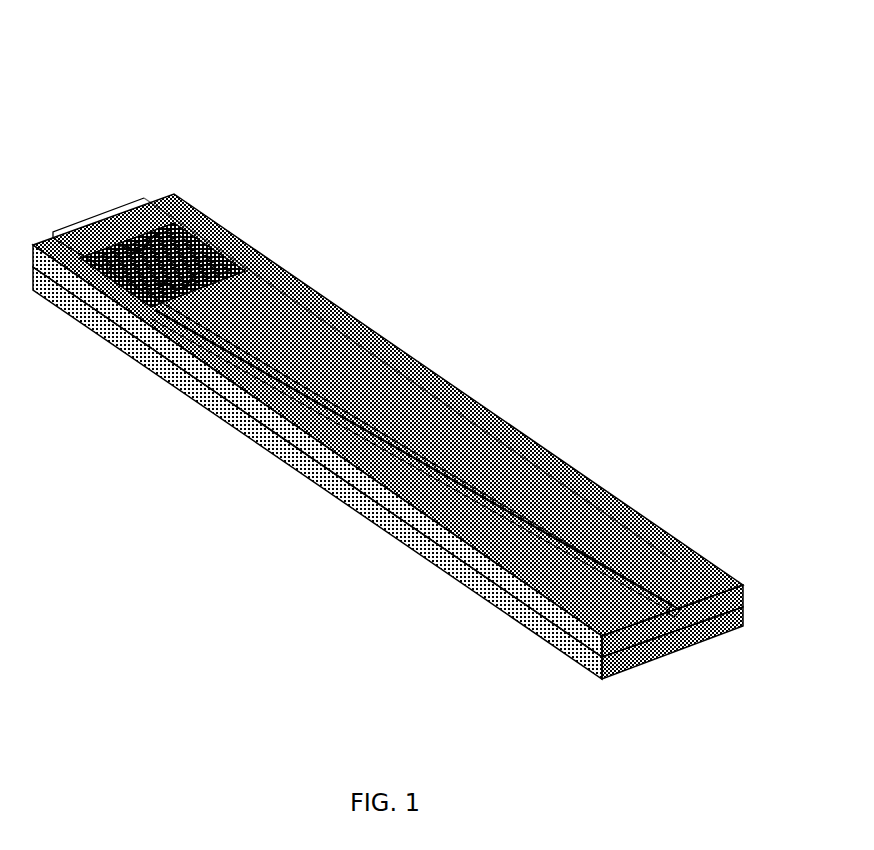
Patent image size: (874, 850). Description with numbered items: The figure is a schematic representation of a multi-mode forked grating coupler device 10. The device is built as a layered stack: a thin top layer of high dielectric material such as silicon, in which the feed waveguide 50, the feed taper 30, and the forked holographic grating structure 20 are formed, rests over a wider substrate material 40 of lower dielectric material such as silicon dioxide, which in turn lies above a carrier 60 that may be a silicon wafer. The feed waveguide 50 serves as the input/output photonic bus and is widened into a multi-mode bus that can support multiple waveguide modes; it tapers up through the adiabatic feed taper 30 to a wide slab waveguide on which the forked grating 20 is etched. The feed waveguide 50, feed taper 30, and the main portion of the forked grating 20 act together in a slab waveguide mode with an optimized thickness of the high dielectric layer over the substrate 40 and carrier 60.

The forked grating coupler device 10 is at (595, 49).
The forked holographic grating structure 20 is at (233, 237).
The feed taper 30 is at (394, 429).
The substrate material 40 is at (566, 471).
The feed waveguide 50 is at (663, 583).
The carrier 60 is at (426, 570).